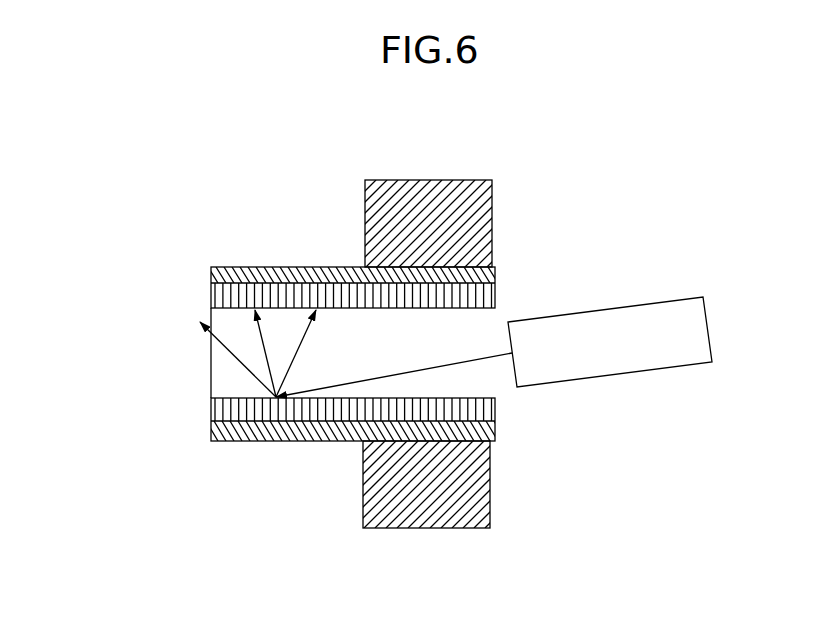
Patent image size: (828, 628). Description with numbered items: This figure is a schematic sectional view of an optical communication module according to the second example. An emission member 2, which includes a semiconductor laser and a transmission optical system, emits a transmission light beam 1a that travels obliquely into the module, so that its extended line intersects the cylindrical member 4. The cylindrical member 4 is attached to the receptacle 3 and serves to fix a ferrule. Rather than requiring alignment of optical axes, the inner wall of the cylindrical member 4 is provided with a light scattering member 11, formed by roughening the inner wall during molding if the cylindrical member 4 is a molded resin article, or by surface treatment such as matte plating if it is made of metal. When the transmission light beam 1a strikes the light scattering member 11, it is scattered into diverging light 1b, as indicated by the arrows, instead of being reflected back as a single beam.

The transmission light beam 1a is at (480, 362).
The reflected light 1b is at (297, 352).
The emission member 2 is at (660, 318).
The receptacle 3 is at (478, 207).
The cylindrical member 4 is at (289, 267).
The light scattering member 11 is at (295, 412).